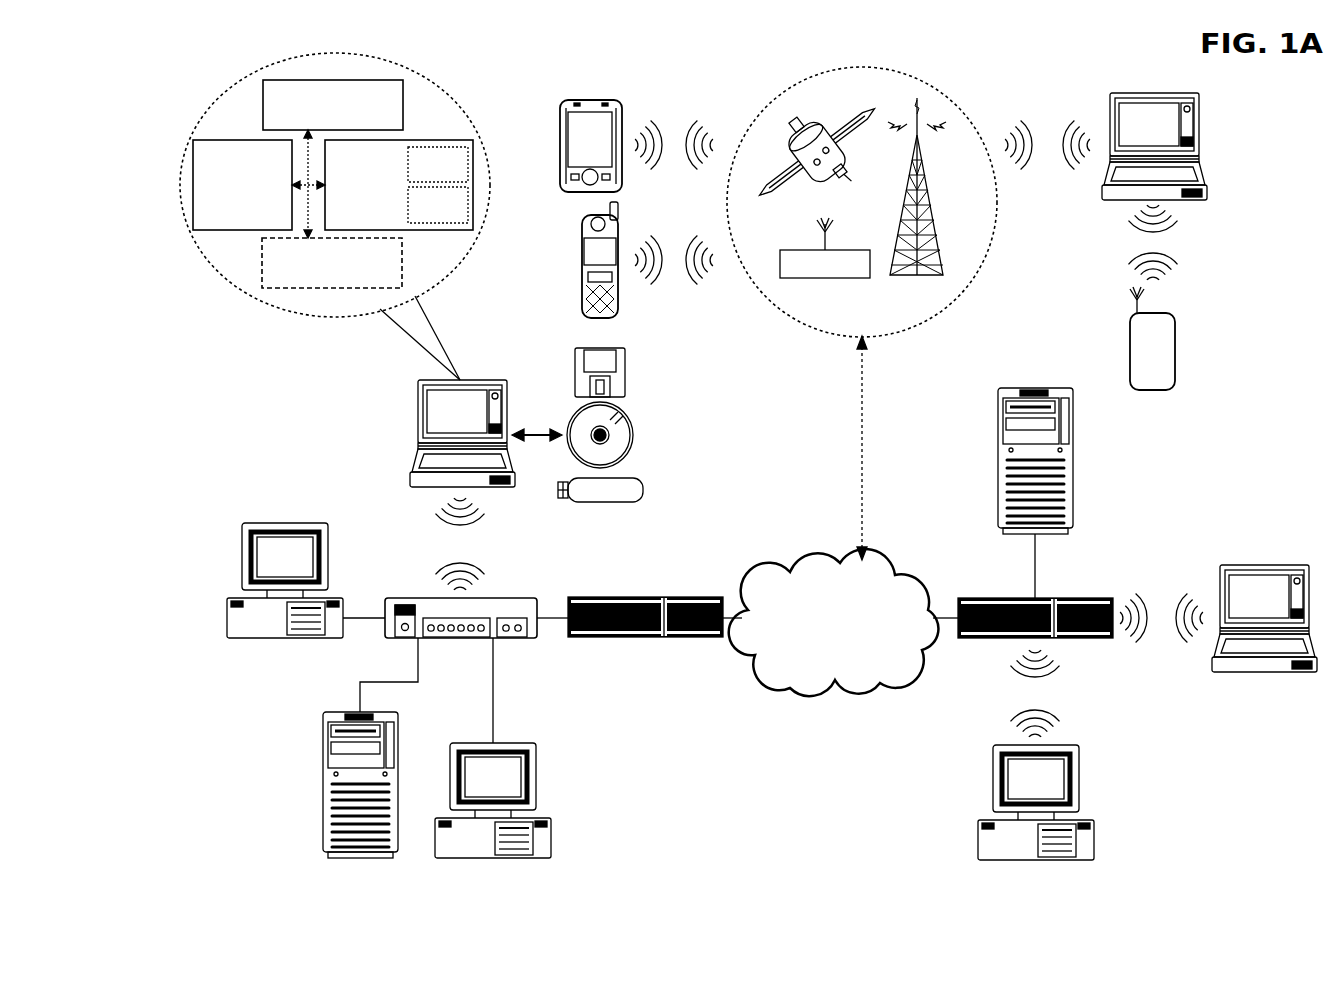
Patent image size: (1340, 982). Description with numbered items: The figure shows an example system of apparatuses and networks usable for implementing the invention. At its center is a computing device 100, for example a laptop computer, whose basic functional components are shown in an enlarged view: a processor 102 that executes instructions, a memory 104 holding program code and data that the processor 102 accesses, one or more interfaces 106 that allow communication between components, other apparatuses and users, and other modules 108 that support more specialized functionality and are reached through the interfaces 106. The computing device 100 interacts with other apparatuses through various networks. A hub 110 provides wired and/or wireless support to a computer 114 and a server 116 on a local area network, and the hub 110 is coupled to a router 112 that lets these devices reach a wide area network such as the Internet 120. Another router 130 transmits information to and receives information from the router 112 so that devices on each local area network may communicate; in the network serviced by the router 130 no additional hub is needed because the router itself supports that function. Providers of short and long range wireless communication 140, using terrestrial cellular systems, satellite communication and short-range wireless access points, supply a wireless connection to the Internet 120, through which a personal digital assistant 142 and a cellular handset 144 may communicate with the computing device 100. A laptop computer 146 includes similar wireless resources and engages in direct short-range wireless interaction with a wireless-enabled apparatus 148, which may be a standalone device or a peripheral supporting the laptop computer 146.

The computing device 100 is at (415, 412).
The processor 102 is at (242, 185).
The memory 104 is at (399, 185).
The interfaces 106 is at (333, 105).
The other modules 108 is at (332, 263).
The hub 110 is at (505, 598).
The router 112 is at (693, 595).
The computer 114 is at (233, 593).
The server 116 is at (323, 783).
The Internet 120 is at (773, 677).
The router 130 is at (1070, 597).
The wireless communication 140 is at (968, 122).
The personal digital assistant 142 is at (558, 138).
The cellular handset 144 is at (580, 255).
The laptop computer 146 is at (1198, 143).
The wireless-enabled apparatus 148 is at (1178, 345).